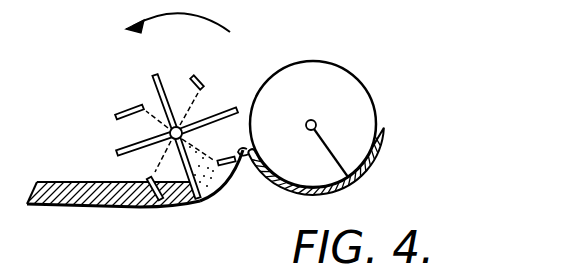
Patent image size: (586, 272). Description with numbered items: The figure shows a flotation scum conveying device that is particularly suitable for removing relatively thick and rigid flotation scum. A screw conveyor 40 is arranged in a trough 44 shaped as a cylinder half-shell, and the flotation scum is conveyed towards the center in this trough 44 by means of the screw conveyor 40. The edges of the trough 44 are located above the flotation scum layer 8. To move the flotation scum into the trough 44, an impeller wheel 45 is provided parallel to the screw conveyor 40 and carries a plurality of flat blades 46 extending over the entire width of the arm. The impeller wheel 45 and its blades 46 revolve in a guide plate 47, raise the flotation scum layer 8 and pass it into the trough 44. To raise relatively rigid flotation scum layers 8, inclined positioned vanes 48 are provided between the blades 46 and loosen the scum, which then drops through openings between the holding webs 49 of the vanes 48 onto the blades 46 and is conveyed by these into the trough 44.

The flotation scum layer 8 is at (77, 181).
The screw conveyor 40 is at (357, 92).
The trough 44 is at (382, 157).
The impeller wheel 45 is at (161, 123).
The flat blades 46 is at (163, 82).
The guide plate 47 is at (218, 193).
The inclined positioned vanes 48 is at (126, 108).
The holding webs 49 is at (198, 108).